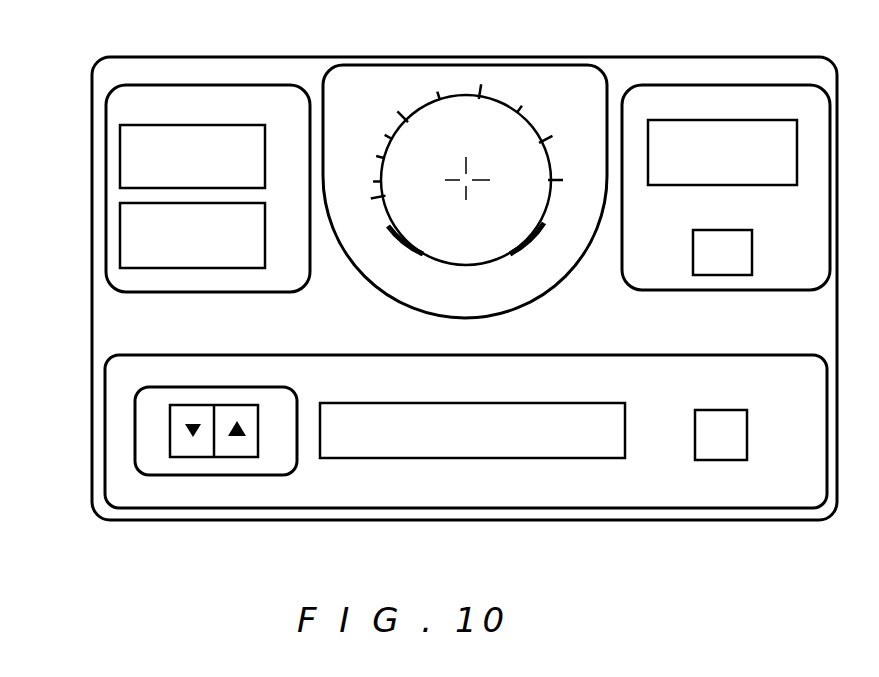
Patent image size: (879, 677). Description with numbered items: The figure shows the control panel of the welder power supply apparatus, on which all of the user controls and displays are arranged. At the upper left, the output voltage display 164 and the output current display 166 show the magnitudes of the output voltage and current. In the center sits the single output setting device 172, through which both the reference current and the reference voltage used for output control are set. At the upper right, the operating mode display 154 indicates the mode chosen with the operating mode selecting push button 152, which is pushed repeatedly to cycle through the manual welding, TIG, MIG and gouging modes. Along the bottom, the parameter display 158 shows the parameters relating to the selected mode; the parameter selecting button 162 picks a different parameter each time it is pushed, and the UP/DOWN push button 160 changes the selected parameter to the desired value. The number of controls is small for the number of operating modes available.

The operating mode selecting push button 152 is at (733, 260).
The operating mode display 154 is at (655, 95).
The parameter display 158 is at (503, 442).
The UP/DOWN push button 160 is at (228, 450).
The parameter selecting button 162 is at (725, 450).
The output voltage display 164 is at (120, 160).
The output current display 166 is at (120, 268).
The output setting device 172 is at (437, 120).